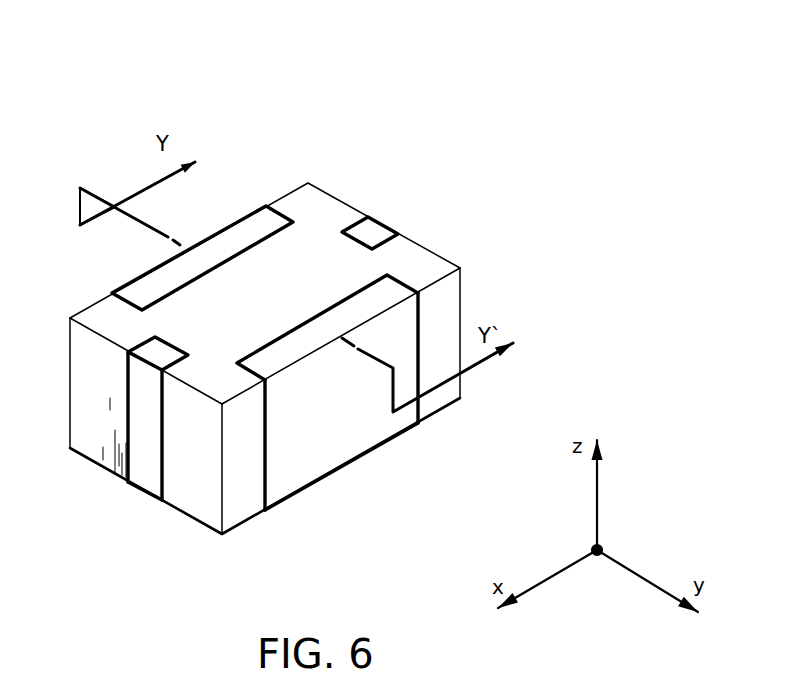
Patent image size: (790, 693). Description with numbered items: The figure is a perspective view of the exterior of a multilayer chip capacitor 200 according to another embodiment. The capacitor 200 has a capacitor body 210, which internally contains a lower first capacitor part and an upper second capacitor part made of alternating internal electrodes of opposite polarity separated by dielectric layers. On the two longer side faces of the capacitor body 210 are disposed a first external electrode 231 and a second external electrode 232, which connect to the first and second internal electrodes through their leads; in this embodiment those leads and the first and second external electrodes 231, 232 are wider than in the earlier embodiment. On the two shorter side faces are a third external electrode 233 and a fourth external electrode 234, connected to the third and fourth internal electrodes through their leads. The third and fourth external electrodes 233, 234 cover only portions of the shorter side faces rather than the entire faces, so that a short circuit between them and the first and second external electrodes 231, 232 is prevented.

The multilayer chip capacitor 200 is at (251, 289).
The capacitor body 210 is at (308, 183).
The first external electrode 231 is at (135, 287).
The second external electrode 232 is at (322, 458).
The third external electrode 233 is at (147, 480).
The fourth external electrode 234 is at (388, 222).